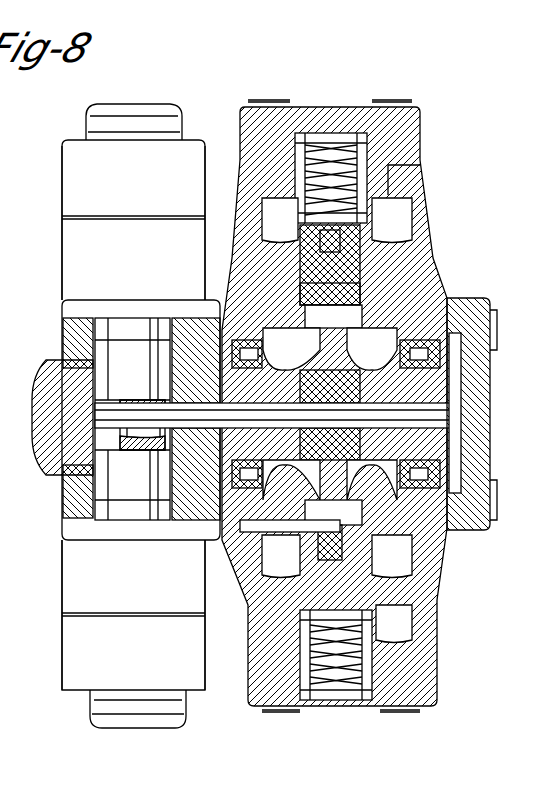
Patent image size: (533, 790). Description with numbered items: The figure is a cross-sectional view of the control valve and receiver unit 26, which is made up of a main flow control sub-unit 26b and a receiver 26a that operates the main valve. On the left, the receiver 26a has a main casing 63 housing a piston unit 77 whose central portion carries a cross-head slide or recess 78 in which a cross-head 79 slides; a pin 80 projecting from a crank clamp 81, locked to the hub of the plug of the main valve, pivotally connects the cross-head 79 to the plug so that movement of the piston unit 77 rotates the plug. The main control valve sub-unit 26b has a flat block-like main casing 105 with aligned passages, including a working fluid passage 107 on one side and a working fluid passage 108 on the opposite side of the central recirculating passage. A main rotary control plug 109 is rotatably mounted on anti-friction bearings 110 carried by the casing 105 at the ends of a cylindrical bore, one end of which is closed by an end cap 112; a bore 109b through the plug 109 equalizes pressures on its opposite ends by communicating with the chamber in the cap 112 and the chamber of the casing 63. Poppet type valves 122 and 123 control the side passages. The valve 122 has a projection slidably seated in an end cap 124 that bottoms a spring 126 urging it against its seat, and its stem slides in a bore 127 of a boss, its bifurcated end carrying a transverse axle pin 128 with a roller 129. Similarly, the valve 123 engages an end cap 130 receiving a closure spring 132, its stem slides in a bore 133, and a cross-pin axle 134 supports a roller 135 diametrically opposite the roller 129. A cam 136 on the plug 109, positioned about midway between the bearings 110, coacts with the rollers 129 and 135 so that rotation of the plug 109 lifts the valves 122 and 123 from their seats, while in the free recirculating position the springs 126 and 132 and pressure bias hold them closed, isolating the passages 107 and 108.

The control valve and receiver unit 26 is at (430, 118).
The receiver 26a is at (75, 181).
The main flow control sub-unit 26b is at (405, 185).
The main casing 63 is at (82, 238).
The piston unit 77 is at (125, 358).
The cross-head slide or recess 78 is at (120, 408).
The cross-head 79 is at (135, 447).
The pin 80 is at (140, 425).
The crank clamp 81 is at (195, 480).
The main casing 105 is at (408, 240).
The working fluid passage 107 is at (275, 205).
The working fluid passage 108 is at (390, 625).
The main rotary control plug 109 is at (360, 392).
The bore 109b is at (277, 415).
The anti-friction bearings 110 is at (200, 358).
The end cap 112 is at (465, 405).
The poppet type valve 122 is at (372, 228).
The poppet type valve 123 is at (345, 555).
The end cap 124 is at (305, 122).
The spring 126 is at (328, 160).
The bore 127 is at (350, 305).
The transverse axle pin 128 is at (350, 336).
The roller 129 is at (315, 340).
The end cap 130 is at (308, 708).
The closure spring 132 is at (338, 680).
The bore 133 is at (380, 528).
The cross-pin axle 134 is at (310, 556).
The roller 135 is at (291, 480).
The cam 136 is at (373, 480).